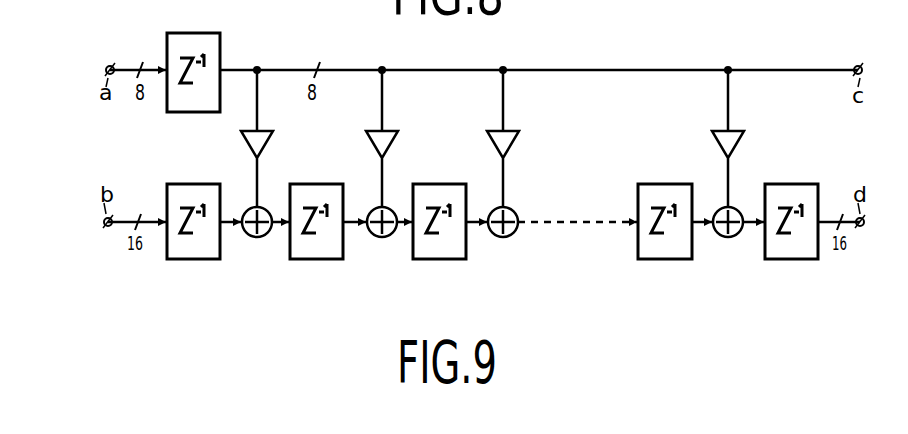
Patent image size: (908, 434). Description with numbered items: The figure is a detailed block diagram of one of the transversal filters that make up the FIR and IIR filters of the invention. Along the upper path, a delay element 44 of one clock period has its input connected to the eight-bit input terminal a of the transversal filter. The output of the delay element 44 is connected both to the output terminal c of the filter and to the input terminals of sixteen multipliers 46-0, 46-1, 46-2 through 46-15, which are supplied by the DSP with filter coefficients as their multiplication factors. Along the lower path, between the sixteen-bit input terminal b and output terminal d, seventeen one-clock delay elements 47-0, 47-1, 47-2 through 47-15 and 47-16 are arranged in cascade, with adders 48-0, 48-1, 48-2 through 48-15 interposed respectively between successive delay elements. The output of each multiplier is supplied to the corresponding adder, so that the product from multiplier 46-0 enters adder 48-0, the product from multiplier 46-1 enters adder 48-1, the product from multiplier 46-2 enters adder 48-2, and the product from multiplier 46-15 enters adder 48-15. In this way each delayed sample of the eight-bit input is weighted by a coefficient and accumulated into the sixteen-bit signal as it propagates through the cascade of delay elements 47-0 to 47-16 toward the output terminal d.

The delay element 44 is at (190, 28).
The multiplier 46-0 is at (266, 133).
The multiplier 46-1 is at (391, 133).
The multiplier 46-2 is at (512, 133).
The multiplier 46-15 is at (737, 133).
The one-clock delay element 47-0 is at (190, 260).
The one-clock delay element 47-1 is at (313, 260).
The one-clock delay element 47-2 is at (436, 260).
The one-clock delay element 47-15 is at (661, 260).
The one-clock delay element 47-16 is at (788, 260).
The adder 48-0 is at (257, 237).
The adder 48-1 is at (382, 237).
The adder 48-2 is at (503, 237).
The adder 48-15 is at (728, 237).